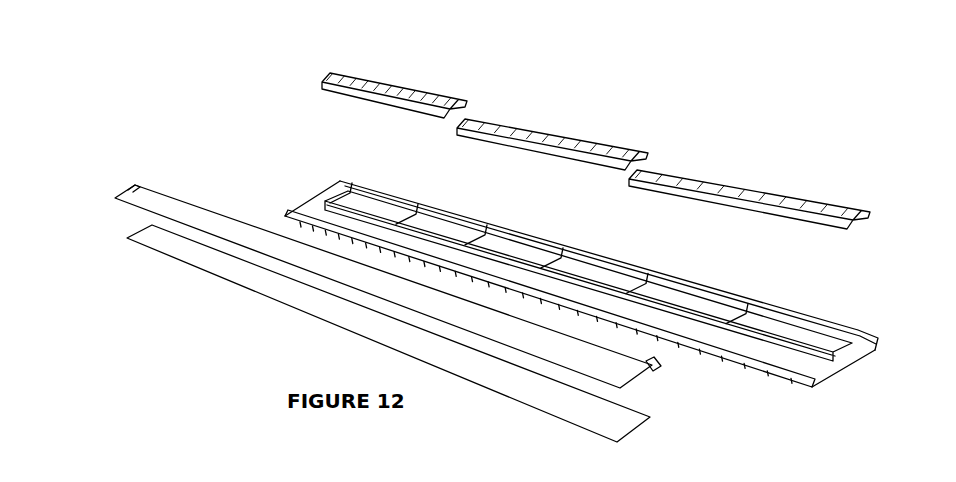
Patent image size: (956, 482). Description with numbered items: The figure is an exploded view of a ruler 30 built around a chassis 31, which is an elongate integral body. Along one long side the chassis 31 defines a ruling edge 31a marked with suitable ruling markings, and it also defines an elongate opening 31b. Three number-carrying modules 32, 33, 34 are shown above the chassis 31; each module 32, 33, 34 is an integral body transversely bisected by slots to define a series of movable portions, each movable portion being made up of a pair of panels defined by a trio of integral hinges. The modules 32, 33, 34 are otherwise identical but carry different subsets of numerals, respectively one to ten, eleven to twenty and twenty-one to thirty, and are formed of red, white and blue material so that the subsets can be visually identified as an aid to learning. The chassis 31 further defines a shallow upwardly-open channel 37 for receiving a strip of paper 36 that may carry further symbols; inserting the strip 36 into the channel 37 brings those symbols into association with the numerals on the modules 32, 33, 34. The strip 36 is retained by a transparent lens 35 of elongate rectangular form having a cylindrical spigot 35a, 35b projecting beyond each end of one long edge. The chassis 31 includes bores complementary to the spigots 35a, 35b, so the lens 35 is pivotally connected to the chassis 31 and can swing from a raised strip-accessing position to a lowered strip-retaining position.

The tile tray assembly 30 is at (166, 82).
The chassis 31 is at (856, 352).
The ruling edge 31a is at (735, 372).
The elongate opening 31b is at (826, 342).
The number-carrying module 32 is at (412, 83).
The number-carrying module 33 is at (560, 128).
The number-carrying module 34 is at (762, 180).
The lens 35 is at (120, 193).
The spigot 35a is at (133, 186).
The spigot 35b is at (660, 370).
The strip of paper 36 is at (125, 240).
The channel 37 is at (325, 213).